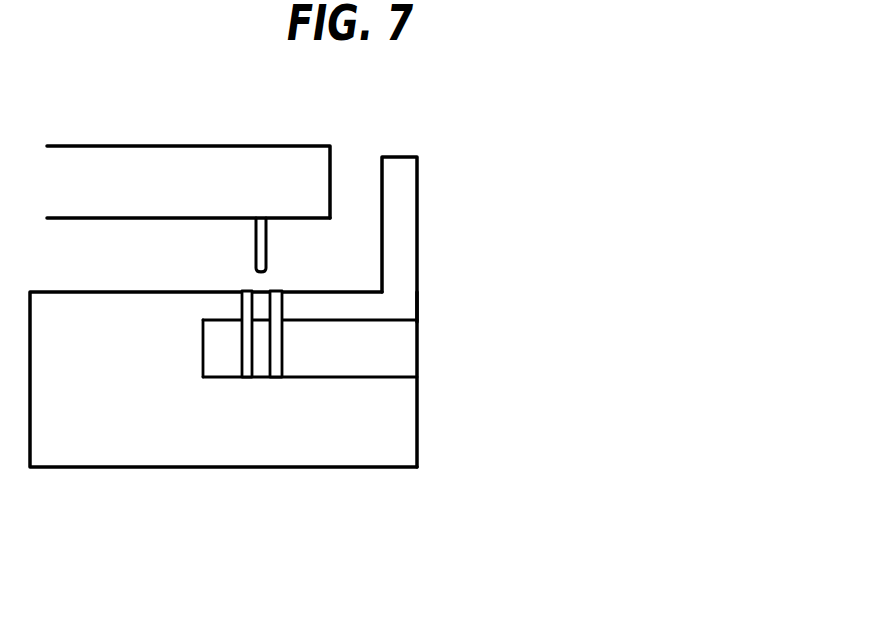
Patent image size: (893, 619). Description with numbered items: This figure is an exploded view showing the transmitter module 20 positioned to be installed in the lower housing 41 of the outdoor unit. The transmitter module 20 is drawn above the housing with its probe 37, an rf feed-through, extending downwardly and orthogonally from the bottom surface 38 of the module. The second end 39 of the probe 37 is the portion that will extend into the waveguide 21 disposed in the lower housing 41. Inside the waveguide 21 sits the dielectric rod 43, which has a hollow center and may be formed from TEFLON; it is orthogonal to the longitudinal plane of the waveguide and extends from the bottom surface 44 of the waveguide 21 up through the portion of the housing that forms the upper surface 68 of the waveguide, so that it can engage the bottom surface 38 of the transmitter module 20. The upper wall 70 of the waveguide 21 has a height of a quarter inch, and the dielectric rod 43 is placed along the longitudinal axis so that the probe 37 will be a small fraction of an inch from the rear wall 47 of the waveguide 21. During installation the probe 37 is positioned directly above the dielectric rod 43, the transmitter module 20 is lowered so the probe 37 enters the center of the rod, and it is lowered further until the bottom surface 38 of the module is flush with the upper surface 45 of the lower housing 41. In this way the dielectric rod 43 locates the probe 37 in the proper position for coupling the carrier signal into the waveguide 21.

The transmitter module 20 is at (118, 144).
The bottom surface 38 is at (108, 220).
The probe 37 is at (268, 231).
The second end 39 is at (255, 272).
The upper surface 45 is at (352, 290).
The upper wall 70 is at (418, 300).
The lower housing 41 is at (391, 468).
The upper surface 68 is at (397, 321).
The waveguide 21 is at (366, 348).
The bottom surface 44 is at (392, 378).
The rear wall 47 is at (204, 353).
The dielectric rod 43 is at (283, 353).